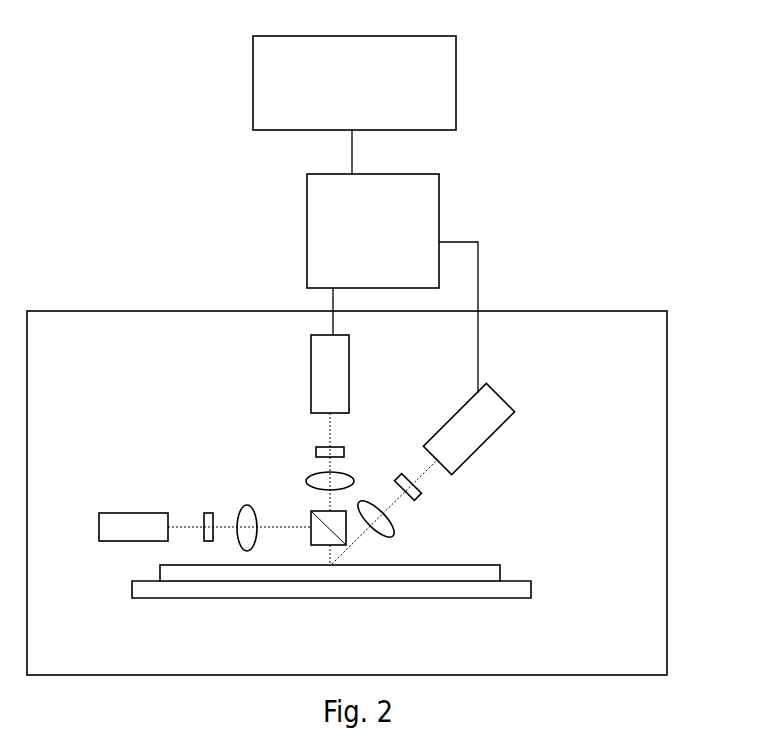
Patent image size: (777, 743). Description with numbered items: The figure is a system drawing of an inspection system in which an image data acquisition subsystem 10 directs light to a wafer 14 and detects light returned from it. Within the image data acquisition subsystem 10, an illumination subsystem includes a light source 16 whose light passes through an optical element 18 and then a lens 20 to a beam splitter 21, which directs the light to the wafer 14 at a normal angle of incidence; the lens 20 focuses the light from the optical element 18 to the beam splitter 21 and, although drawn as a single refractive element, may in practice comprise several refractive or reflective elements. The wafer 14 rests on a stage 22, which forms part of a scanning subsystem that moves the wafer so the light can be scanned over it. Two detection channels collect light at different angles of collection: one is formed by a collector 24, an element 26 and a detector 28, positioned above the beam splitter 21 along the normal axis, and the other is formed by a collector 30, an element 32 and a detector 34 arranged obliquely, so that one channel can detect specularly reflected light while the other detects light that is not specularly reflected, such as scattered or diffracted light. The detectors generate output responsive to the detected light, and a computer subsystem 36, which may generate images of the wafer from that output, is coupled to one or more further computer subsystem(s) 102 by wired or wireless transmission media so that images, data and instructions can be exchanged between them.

The image data acquisition subsystem 10 is at (668, 332).
The computer subsystem(s) 102 is at (354, 83).
The computer subsystem 36 is at (373, 231).
The light source 16 is at (110, 513).
The optical element 18 is at (207, 513).
The lens 20 is at (244, 505).
The beam splitter 21 is at (327, 511).
The collector 24 is at (310, 477).
The element 26 is at (317, 448).
The detector 28 is at (311, 377).
The collector 30 is at (395, 535).
The element 32 is at (418, 497).
The detector 34 is at (500, 432).
The wafer 14 is at (160, 568).
The stage 22 is at (132, 592).